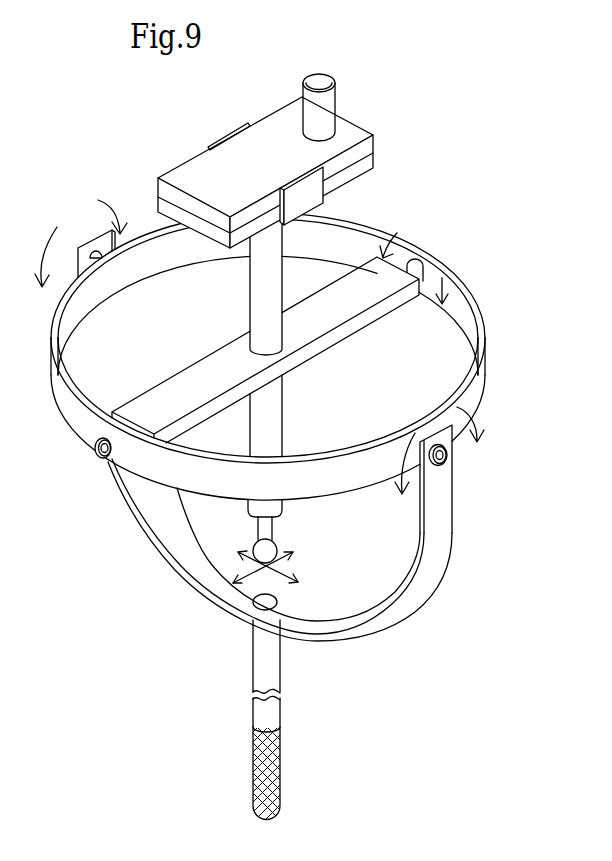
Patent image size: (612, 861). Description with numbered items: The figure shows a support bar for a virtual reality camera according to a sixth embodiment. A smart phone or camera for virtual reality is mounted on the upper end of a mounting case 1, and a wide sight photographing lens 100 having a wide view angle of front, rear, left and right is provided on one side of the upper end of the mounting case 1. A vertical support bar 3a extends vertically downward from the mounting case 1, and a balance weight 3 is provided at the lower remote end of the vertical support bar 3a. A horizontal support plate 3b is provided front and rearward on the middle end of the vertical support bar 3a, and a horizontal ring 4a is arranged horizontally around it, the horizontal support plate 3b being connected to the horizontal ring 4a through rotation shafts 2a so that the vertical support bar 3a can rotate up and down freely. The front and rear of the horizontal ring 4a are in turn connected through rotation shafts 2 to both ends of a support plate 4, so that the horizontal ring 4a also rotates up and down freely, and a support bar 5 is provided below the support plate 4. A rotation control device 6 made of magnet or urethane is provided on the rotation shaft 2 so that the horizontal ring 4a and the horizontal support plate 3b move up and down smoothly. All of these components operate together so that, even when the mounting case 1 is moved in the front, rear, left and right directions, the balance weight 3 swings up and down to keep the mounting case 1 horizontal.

The wide sight photographing lens 100 is at (326, 80).
The mounting case 1 is at (371, 162).
The rotation shaft 2 is at (95, 244).
The rotation shaft 2a is at (415, 262).
The balance weight 3 is at (272, 542).
The vertical support bar 3a is at (271, 412).
The horizontal support plate 3b is at (203, 373).
The support plate 4 is at (205, 560).
The horizontal ring 4a is at (476, 317).
The support bar 5 is at (268, 667).
The rotation control device 6 is at (108, 463).